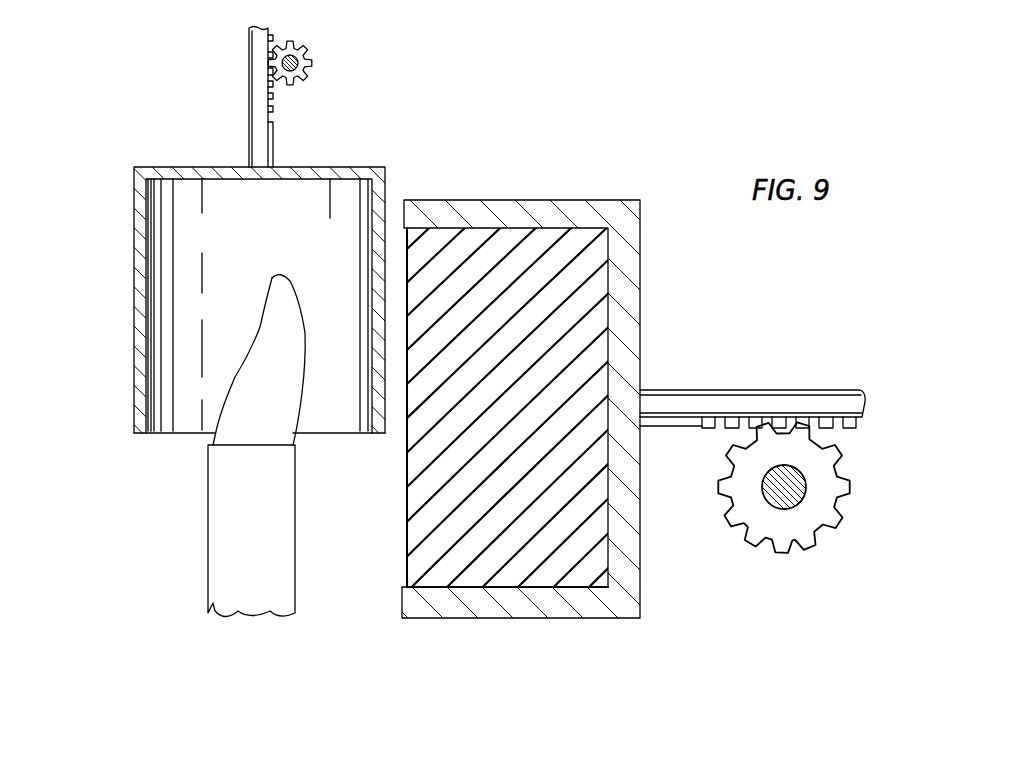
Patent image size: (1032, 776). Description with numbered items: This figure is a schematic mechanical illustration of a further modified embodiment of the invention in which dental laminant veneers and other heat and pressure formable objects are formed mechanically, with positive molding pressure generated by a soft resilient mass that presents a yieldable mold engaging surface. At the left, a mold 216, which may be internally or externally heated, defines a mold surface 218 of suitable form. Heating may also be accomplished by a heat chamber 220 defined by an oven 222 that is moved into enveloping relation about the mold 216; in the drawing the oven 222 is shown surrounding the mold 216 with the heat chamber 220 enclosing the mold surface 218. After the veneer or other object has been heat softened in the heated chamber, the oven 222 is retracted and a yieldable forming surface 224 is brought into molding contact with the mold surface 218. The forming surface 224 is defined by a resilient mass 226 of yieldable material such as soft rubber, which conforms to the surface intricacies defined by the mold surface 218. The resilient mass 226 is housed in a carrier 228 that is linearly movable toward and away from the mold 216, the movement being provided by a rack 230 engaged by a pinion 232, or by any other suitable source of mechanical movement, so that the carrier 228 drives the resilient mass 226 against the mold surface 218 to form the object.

The mold 216 is at (258, 363).
The mold surface 218 is at (302, 318).
The heat chamber 220 is at (229, 243).
The oven 222 is at (133, 295).
The yieldable forming surface 224 is at (516, 414).
The resilient mass 226 is at (523, 558).
The carrier 228 is at (537, 208).
The rack 230 is at (780, 400).
The pinion 232 is at (783, 528).